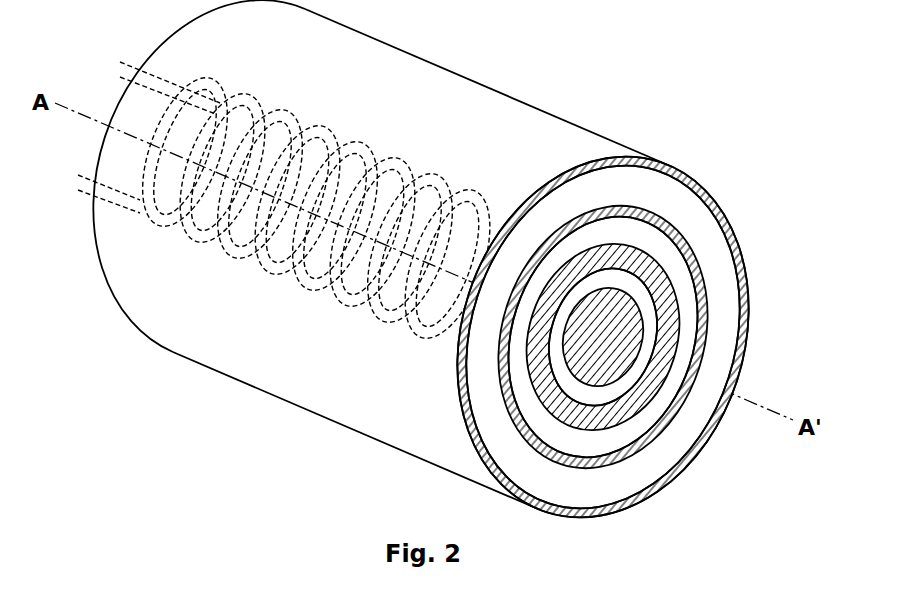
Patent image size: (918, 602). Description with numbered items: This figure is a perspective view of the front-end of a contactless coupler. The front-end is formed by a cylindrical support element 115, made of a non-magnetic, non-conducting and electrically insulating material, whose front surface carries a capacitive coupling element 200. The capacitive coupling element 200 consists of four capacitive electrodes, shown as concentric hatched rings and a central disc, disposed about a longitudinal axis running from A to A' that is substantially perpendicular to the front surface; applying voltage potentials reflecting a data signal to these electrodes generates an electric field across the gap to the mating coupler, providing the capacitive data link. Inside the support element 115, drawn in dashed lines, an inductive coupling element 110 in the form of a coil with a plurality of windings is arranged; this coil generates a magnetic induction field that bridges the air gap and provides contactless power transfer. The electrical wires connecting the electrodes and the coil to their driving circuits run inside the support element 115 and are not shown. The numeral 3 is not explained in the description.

The cable 3 is at (617, 326).
The inductive coupling element 110 is at (381, 254).
The support element 115 is at (478, 84).
The capacitive coupling element 200 is at (679, 507).